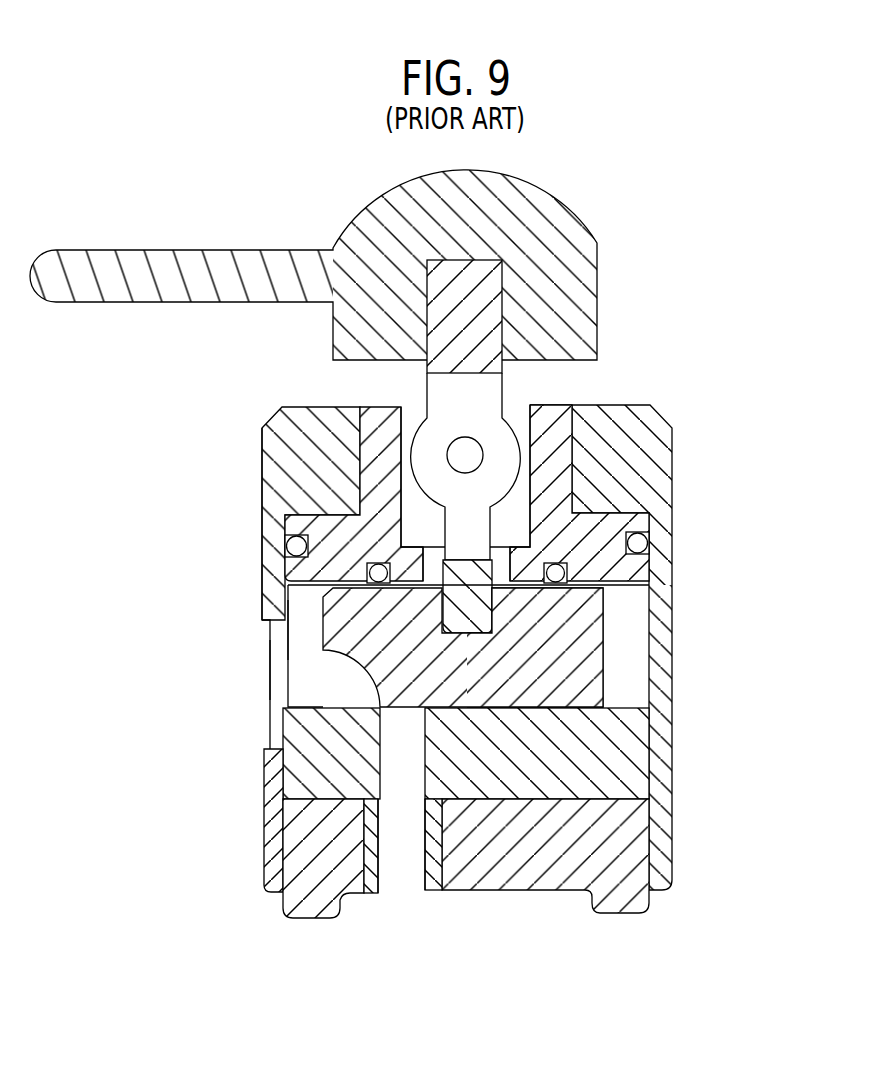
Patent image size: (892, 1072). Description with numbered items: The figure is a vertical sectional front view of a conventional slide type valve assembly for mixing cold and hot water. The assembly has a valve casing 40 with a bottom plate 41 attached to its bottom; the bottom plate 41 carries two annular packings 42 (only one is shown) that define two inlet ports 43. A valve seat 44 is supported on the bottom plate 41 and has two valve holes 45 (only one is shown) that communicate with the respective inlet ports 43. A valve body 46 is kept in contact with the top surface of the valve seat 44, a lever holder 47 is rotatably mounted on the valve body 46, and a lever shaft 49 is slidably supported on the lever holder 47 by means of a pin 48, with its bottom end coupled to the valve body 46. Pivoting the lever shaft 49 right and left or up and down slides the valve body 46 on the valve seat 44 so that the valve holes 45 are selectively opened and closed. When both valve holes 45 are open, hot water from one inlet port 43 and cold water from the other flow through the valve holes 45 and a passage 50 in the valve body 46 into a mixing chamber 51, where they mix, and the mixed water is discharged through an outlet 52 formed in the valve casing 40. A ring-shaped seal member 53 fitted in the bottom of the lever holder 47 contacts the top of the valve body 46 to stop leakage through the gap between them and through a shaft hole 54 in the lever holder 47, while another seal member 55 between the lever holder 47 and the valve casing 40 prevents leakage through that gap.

The valve casing 40 is at (293, 418).
The bottom plate 41 is at (292, 840).
The annular packing 42 is at (376, 882).
The inlet port 43 is at (402, 873).
The valve seat 44 is at (290, 762).
The valve hole 45 is at (390, 733).
The valve body 46 is at (323, 598).
The lever holder 47 is at (370, 495).
The pin 48 is at (468, 452).
The lever shaft 49 is at (487, 340).
The passage 50 is at (323, 667).
The mixing chamber 51 is at (303, 630).
The outlet 52 is at (290, 660).
The ring-shaped seal member 53 is at (565, 580).
The shaft hole 54 is at (520, 510).
The seal member 55 is at (648, 543).